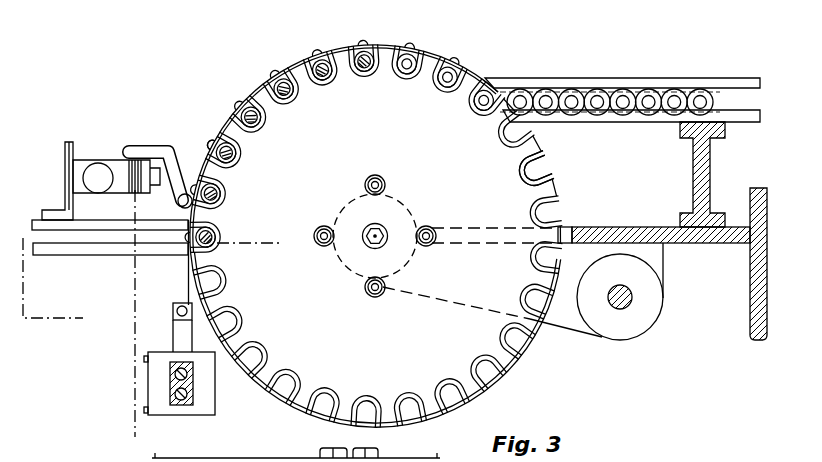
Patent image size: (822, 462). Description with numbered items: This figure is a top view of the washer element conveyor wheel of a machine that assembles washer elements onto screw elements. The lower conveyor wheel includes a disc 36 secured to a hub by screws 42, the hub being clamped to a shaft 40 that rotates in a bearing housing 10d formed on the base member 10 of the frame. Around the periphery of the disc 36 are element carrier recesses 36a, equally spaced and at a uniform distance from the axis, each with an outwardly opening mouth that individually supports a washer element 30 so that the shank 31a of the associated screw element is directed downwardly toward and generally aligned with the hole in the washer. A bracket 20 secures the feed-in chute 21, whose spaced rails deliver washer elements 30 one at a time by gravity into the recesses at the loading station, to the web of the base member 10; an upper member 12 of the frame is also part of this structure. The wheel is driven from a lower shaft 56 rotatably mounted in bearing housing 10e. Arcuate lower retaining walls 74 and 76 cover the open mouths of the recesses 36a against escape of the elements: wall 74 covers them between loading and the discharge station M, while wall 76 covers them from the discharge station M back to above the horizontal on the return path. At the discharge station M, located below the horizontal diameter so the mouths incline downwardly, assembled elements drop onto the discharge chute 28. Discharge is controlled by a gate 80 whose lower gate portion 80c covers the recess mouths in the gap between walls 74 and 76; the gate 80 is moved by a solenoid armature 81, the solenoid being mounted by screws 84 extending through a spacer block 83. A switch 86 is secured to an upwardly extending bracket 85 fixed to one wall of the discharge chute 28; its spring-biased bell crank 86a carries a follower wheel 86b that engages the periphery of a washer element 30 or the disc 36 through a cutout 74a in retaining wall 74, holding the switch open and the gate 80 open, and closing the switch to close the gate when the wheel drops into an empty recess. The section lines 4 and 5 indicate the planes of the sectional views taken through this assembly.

The section line 4- 4 is at (128, 207).
The section line 5- 5 is at (70, 325).
The base member 10 is at (746, 246).
The bearing housing 10d is at (365, 287).
The bearing housing 10e is at (621, 341).
The upper member 12 is at (490, 84).
The bracket 20 is at (692, 203).
The feed-in chute 21 is at (603, 78).
The discharge chute 28 is at (117, 258).
The washer element 30 is at (291, 98).
The shank 31a is at (338, 80).
The disc 36 is at (373, 233).
The element carrier recess 36a is at (552, 172).
The shaft 40 is at (386, 228).
The screw 42 is at (386, 182).
The lower shaft 56 is at (626, 302).
The lower retaining wall 74 is at (332, 47).
The cutout 74a is at (205, 183).
The lower retaining wall 76 is at (502, 395).
The gate 80 is at (186, 416).
The lower gate portion 80c is at (186, 284).
The solenoid armature 81 is at (174, 338).
The spacer block 83 is at (172, 386).
The screw 84 is at (335, 448).
The bracket 85 is at (63, 203).
The switch 86 is at (99, 166).
The bell crank 86a is at (176, 150).
The follower wheel 86b is at (198, 208).
The discharge station M is at (181, 249).